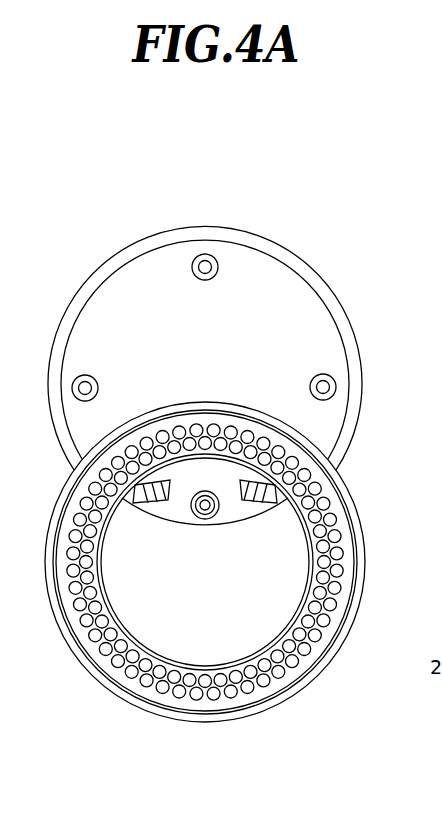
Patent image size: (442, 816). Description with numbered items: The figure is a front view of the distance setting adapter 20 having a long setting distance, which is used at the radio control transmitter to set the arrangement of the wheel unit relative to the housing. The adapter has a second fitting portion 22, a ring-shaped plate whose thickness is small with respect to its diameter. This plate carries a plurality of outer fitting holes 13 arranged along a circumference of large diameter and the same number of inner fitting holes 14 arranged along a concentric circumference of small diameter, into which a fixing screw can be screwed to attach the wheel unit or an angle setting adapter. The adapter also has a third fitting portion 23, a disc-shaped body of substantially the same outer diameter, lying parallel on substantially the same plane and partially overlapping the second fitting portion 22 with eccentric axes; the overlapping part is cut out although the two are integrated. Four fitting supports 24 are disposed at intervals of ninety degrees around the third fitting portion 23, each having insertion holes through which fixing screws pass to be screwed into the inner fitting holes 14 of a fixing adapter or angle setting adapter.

The outer fitting holes 13 is at (238, 724).
The inner fitting holes 14 is at (240, 667).
The distance setting adapter 20 is at (286, 222).
The second fitting portion 22 is at (53, 612).
The third fitting portion 23 is at (50, 350).
The fitting supports 24 is at (205, 254).